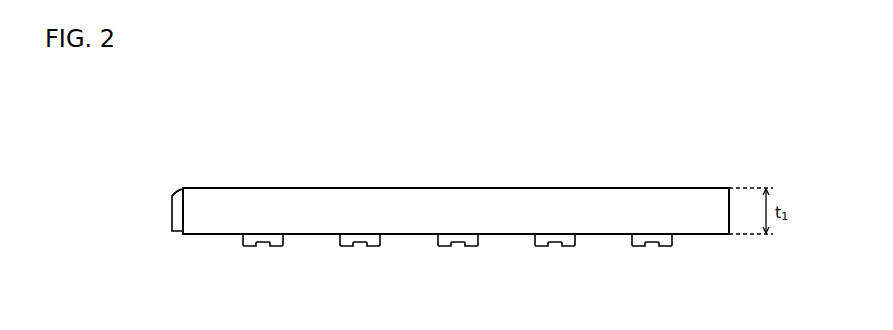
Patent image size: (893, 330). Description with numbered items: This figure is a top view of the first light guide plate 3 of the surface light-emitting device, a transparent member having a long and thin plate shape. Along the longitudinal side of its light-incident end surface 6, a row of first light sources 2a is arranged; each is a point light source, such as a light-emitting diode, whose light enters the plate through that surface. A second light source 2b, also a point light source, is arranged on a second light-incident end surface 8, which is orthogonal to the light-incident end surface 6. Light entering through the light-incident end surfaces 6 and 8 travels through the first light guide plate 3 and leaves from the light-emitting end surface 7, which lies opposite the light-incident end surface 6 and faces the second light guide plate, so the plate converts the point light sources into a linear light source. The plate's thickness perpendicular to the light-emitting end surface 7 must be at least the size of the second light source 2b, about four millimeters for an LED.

The first light sources 2a is at (467, 244).
The second light source 2b is at (172, 219).
The first light guide plate 3 is at (423, 216).
The light-incident end surface 6 is at (297, 235).
The light-emitting end surface 7 is at (372, 188).
The light-incident end surface 8 is at (174, 190).